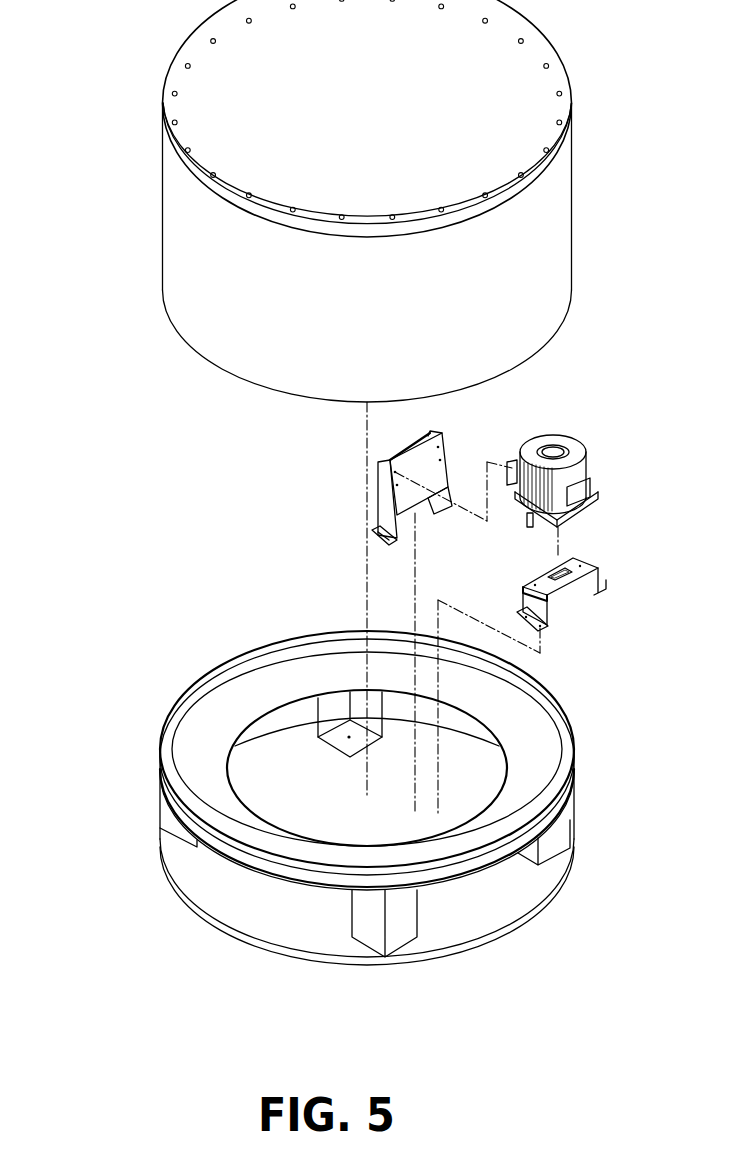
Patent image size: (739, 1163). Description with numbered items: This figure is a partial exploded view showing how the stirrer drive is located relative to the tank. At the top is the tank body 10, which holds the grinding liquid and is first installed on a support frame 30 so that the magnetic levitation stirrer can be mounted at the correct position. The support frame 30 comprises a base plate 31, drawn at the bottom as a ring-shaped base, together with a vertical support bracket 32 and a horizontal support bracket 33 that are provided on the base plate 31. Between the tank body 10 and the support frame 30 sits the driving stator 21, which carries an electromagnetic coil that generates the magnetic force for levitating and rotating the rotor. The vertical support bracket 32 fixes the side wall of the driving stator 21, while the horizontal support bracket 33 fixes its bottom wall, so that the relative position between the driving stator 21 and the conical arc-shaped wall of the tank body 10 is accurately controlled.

The tank body 10 is at (522, 262).
The driving stator 21 is at (583, 475).
The support frame 30 is at (168, 792).
The base plate 31 is at (226, 902).
The vertical support bracket 32 is at (435, 457).
The horizontal support bracket 33 is at (595, 580).